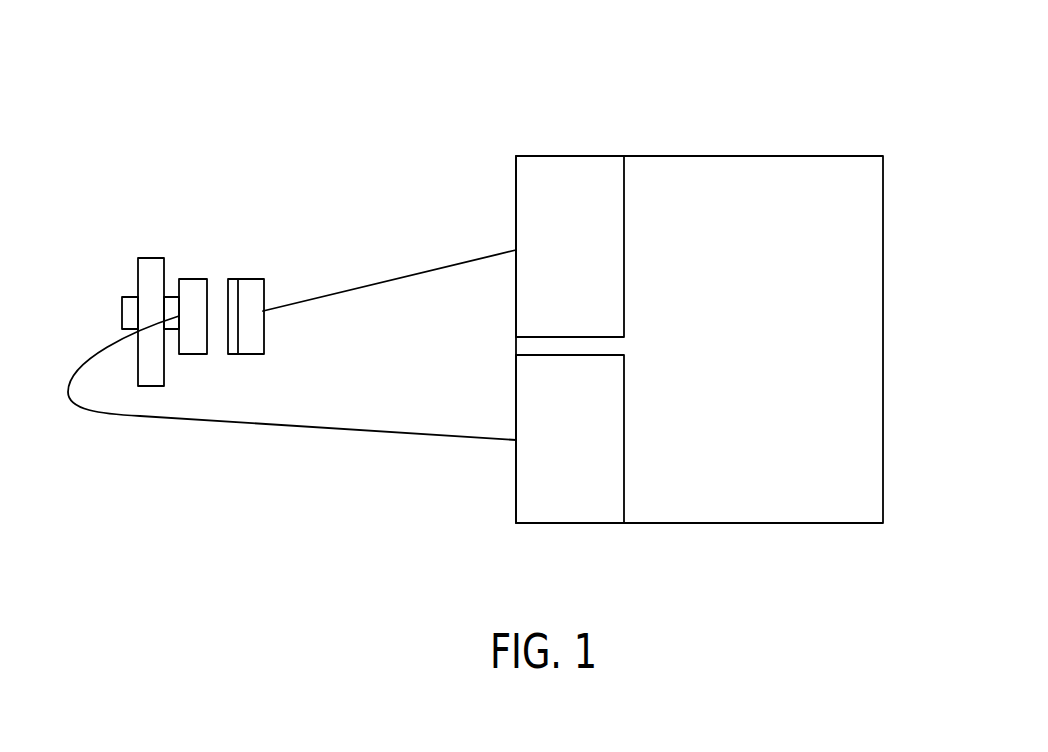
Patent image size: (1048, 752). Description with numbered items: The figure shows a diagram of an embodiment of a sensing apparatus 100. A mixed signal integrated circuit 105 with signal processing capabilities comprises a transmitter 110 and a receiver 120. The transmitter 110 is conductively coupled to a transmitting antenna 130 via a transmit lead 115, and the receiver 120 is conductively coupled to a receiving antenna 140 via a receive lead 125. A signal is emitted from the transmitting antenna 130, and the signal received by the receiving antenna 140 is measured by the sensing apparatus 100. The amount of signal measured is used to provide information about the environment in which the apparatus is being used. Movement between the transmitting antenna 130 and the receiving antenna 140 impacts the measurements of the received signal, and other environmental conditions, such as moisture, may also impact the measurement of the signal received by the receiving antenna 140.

The sensing apparatus 100 is at (949, 95).
The mixed signal integrated circuit 105 is at (752, 350).
The transmitter 110 is at (570, 222).
The transmit lead 115 is at (420, 272).
The receiver 120 is at (580, 420).
The receive lead 125 is at (382, 432).
The transmitting antenna 130 is at (247, 277).
The receiving antenna 140 is at (197, 277).